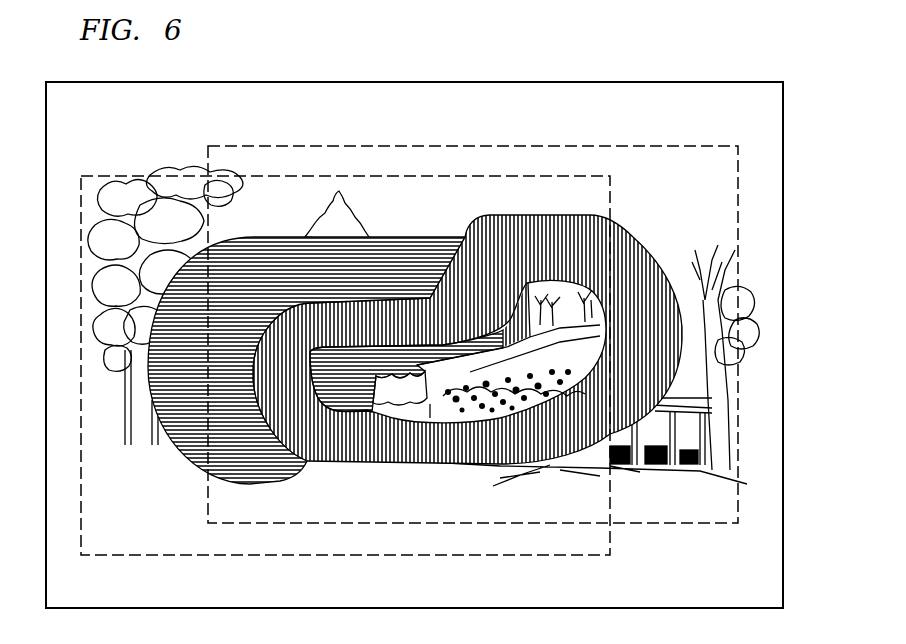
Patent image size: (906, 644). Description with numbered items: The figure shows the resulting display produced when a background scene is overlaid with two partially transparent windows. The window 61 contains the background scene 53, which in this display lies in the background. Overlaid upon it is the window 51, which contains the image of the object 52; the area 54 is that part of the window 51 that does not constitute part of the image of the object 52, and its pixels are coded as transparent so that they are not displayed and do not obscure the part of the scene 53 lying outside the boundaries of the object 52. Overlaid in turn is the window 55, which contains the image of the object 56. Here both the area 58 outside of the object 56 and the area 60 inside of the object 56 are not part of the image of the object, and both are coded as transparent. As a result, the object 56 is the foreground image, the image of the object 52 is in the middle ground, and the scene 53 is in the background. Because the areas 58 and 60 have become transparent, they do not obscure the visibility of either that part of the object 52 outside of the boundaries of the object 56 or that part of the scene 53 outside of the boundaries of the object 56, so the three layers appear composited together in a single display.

The window 61 is at (783, 110).
The background scene 53 is at (773, 152).
The window 55 is at (738, 205).
The area outside of object 58 is at (710, 226).
The window 51 is at (80, 390).
The area 54 is at (98, 447).
The object 52 is at (270, 470).
The object 56 is at (375, 462).
The area inside of object 60 is at (428, 432).